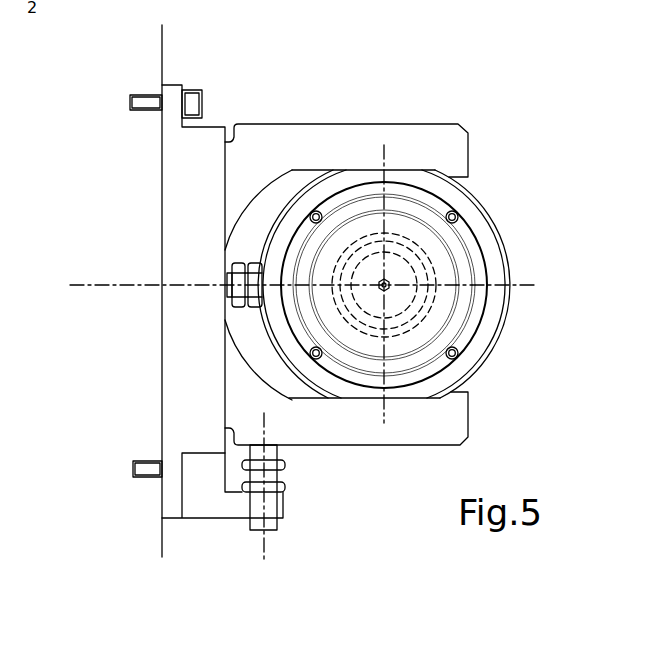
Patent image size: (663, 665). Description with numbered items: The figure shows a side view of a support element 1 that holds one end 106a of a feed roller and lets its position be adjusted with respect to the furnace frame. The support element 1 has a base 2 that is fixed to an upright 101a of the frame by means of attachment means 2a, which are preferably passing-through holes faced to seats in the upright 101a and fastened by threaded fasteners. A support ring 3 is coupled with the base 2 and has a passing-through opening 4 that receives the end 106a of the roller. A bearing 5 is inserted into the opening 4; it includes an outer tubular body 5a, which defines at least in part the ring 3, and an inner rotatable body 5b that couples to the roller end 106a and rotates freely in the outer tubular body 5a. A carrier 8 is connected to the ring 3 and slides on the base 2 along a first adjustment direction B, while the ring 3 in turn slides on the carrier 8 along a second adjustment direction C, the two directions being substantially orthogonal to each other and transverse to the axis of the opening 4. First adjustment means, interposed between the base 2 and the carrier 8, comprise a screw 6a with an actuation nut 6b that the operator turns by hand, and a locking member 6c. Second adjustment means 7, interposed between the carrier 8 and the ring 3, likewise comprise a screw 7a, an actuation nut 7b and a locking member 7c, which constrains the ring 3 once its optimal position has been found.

The support element 1 is at (497, 104).
The base 2 is at (182, 406).
The attachment means 2a is at (146, 476).
The support ring 3 is at (486, 229).
The passing-through opening 4 is at (398, 278).
The bearing 5 is at (420, 308).
The outer tubular body 5a is at (366, 236).
The inner rotatable body 5b is at (398, 237).
The screw 6a is at (286, 486).
The actuation nut 6b is at (286, 464).
The locking member 6c is at (247, 491).
The second adjustment means 7 is at (173, 268).
The screw 7a is at (228, 277).
The actuation nut 7b is at (238, 263).
The locking member 7c is at (253, 263).
The carrier 8 is at (258, 147).
The upright 101a is at (163, 49).
The roller end 106a is at (397, 307).
The first adjustment direction B is at (265, 548).
The second adjustment direction C is at (90, 285).